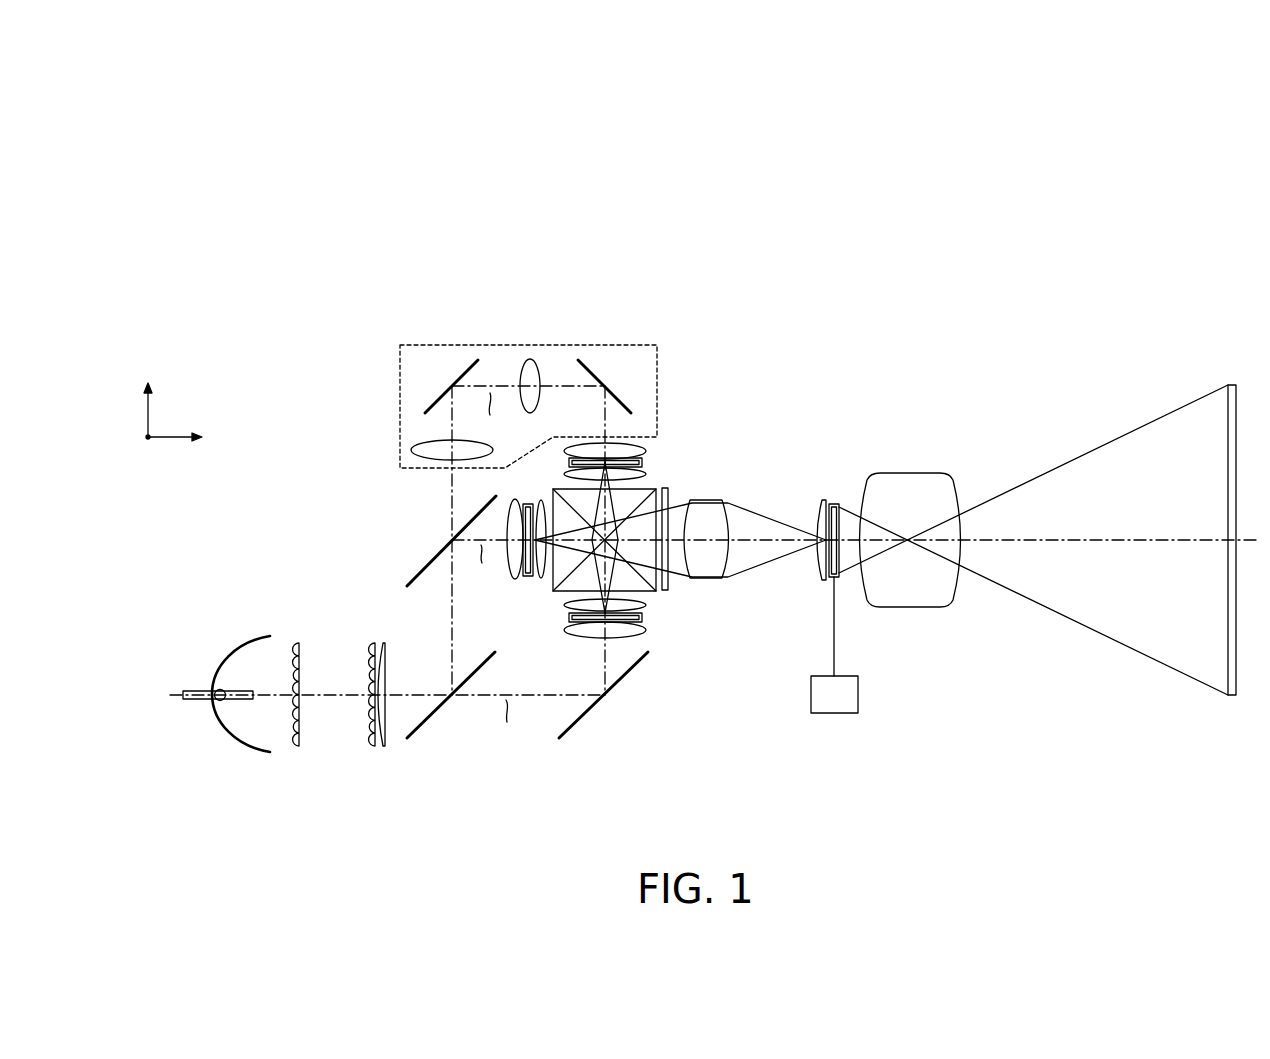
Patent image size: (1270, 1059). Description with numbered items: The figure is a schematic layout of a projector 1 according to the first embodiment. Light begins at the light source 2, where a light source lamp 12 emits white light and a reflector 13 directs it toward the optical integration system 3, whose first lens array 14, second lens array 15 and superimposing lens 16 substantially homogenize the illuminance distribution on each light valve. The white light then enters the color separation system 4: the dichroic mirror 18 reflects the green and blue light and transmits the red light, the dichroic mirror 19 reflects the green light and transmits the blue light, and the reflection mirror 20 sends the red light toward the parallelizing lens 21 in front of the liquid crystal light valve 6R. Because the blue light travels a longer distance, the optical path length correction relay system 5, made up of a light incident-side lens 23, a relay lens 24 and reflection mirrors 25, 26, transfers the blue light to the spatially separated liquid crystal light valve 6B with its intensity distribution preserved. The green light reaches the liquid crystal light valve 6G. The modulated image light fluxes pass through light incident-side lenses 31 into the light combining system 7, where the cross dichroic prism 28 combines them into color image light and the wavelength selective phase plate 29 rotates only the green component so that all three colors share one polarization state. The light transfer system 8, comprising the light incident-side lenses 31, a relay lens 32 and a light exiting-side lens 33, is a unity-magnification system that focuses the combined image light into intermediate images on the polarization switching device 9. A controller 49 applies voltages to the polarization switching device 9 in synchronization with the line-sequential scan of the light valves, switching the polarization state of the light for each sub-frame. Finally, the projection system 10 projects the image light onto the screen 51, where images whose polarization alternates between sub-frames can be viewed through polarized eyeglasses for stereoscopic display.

The projector 1 is at (695, 497).
The light source 2 is at (226, 682).
The optical integration system 3 is at (345, 687).
The color separation system 4 is at (501, 522).
The optical path length correction relay system 5 is at (501, 372).
The liquid crystal light valve 6B is at (645, 462).
The liquid crystal light valve 6G is at (528, 580).
The liquid crystal light valve 6R is at (642, 617).
The light combining system 7 is at (648, 584).
The light transfer system 8 is at (822, 592).
The polarization switching device 9 is at (826, 500).
The projection system 10 is at (905, 473).
The light source lamp 12 is at (222, 700).
The reflector 13 is at (230, 745).
The first lens array 14 is at (295, 748).
The second lens array 15 is at (372, 748).
The superimposing lens 16 is at (384, 748).
The dichroic mirror 18 is at (437, 710).
The dichroic mirror 19 is at (428, 572).
The reflection mirror 20 is at (592, 712).
The parallelizing lens 21 is at (640, 448).
The light incident-side lens 23 is at (410, 450).
The relay lens 24 is at (530, 360).
The reflection mirror 25 is at (462, 368).
The reflection mirror 26 is at (592, 358).
The cross dichroic prism 28 is at (565, 598).
The wavelength selective phase plate 29 is at (669, 492).
The light incident-side lens 31 is at (645, 475).
The relay lens 32 is at (712, 579).
The light exiting-side lens 33 is at (823, 582).
The controller 49 is at (831, 713).
The screen 51 is at (1232, 384).